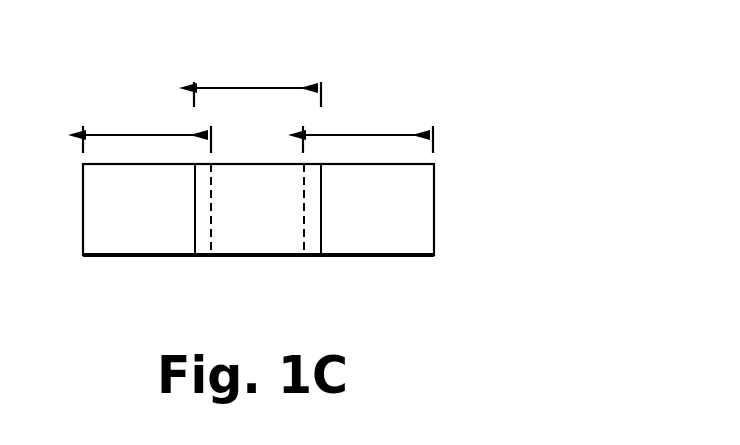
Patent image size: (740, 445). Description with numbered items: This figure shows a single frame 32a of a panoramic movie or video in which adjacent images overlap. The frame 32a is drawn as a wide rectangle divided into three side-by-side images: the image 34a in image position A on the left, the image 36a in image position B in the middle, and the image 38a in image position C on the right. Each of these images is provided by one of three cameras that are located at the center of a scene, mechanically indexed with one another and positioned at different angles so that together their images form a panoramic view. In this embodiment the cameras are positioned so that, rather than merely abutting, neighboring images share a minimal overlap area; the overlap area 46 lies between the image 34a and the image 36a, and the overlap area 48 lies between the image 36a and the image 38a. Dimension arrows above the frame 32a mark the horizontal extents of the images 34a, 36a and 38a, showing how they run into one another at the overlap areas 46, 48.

The frame 32a is at (473, 161).
The image 34a is at (146, 133).
The image 36a is at (259, 87).
The image 38a is at (368, 133).
The overlap area 46 is at (200, 248).
The overlap area 48 is at (313, 248).